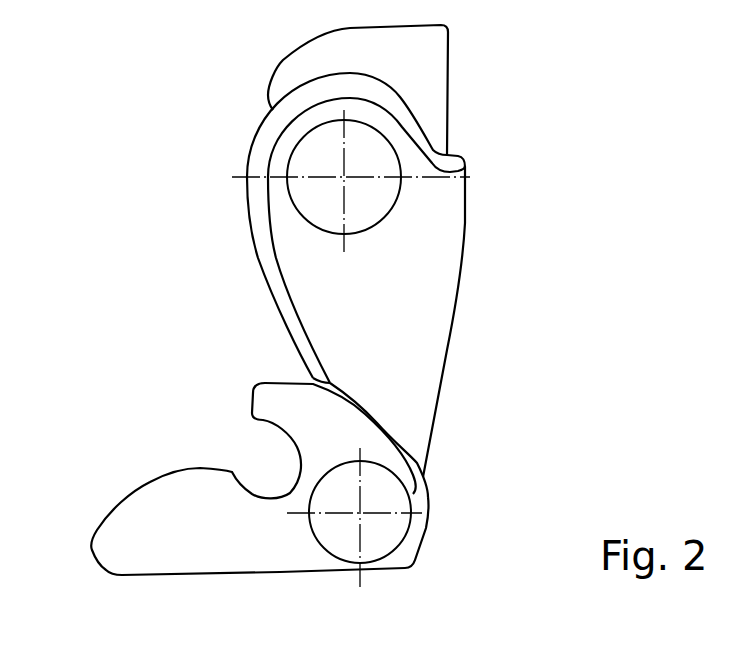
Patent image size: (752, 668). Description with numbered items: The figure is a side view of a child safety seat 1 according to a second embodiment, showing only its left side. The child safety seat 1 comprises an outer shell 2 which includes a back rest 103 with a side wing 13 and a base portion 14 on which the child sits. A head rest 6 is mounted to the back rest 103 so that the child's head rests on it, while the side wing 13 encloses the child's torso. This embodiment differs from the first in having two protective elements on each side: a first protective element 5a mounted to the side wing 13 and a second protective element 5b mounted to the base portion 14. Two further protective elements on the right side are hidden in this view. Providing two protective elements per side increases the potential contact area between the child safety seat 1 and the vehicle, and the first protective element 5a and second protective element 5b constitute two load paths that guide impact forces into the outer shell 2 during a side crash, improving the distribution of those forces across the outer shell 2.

The child safety seat 1 is at (120, 296).
The outer shell 2 is at (417, 435).
The first protective element 5a is at (367, 198).
The second protective element 5b is at (362, 532).
The head rest 6 is at (413, 56).
The side wing 13 is at (322, 275).
The base portion 14 is at (172, 518).
The back rest 103 is at (428, 362).